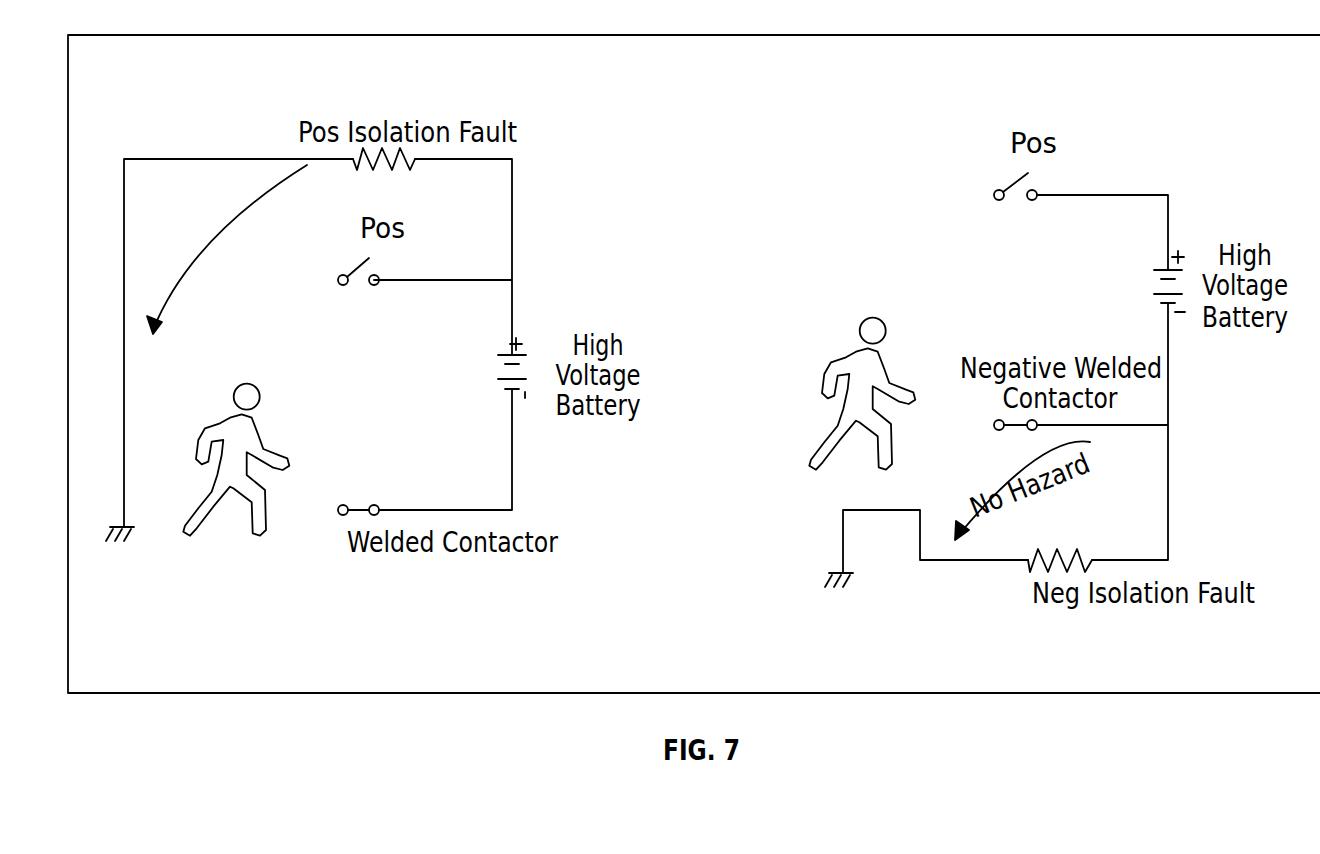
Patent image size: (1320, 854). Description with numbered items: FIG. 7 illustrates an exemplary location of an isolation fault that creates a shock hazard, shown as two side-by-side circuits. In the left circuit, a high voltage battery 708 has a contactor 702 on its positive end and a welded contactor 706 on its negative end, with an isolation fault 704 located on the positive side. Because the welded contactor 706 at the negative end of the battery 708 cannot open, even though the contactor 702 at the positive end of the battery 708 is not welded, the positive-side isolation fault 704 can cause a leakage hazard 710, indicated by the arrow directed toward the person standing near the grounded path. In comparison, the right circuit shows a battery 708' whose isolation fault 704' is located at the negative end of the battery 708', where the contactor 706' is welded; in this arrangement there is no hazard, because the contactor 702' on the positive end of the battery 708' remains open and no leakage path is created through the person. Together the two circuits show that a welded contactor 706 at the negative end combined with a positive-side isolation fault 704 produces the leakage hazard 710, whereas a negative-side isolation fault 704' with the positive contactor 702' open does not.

The contactor 702 is at (338, 288).
The isolation fault 704 is at (408, 175).
The welded contactor 706 is at (490, 543).
The battery 708 is at (570, 323).
The leakage hazard 710 is at (172, 297).
The contactor 702' is at (993, 204).
The isolation fault 704' is at (1150, 560).
The contactor 706' is at (1116, 410).
The battery 708' is at (1226, 240).